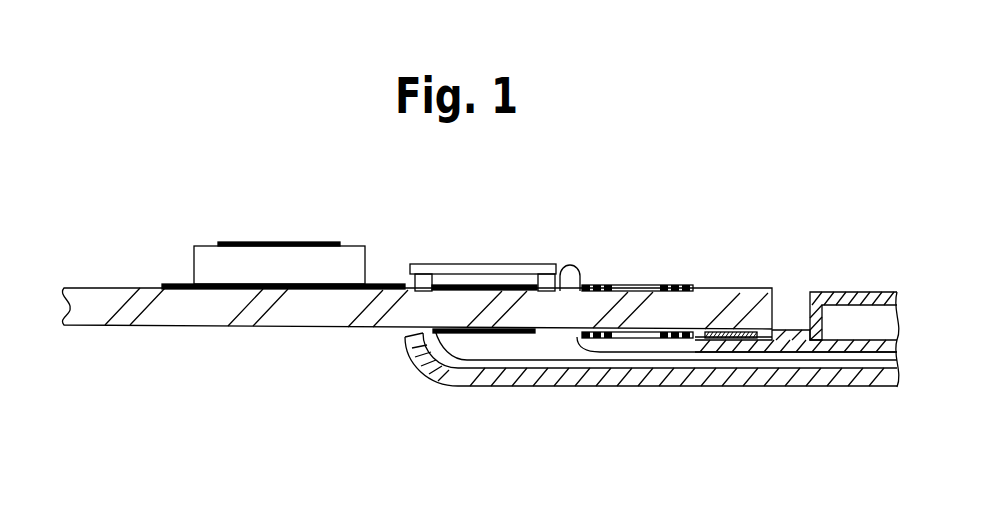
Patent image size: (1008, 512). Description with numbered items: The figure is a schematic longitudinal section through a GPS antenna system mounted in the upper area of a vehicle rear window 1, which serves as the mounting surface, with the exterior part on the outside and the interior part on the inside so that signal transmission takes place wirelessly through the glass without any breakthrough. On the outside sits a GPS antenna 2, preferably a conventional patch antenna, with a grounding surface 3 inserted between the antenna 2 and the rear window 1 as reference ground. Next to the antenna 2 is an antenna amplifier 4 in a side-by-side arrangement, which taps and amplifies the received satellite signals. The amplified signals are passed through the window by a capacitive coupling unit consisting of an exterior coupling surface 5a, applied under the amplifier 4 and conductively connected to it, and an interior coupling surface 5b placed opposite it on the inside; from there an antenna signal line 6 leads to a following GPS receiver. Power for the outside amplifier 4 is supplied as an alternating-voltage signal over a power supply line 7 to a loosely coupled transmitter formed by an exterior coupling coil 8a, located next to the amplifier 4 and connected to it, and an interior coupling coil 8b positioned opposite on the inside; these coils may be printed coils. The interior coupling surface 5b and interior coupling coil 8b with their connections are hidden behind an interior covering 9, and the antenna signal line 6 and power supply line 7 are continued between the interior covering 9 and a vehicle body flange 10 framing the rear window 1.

The vehicle rear window 1 is at (148, 315).
The GPS antenna 2 is at (277, 258).
The grounding surface 3 is at (175, 283).
The antenna amplifier 4 is at (492, 265).
The exterior coupling surface 5a is at (453, 285).
The interior coupling surface 5b is at (475, 332).
The antenna signal line 6 is at (498, 363).
The power supply line 7 is at (657, 352).
The exterior coupling coil 8a is at (640, 287).
The interior coupling coil 8b is at (623, 337).
The interior covering 9 is at (420, 352).
The vehicle body flange 10 is at (805, 342).